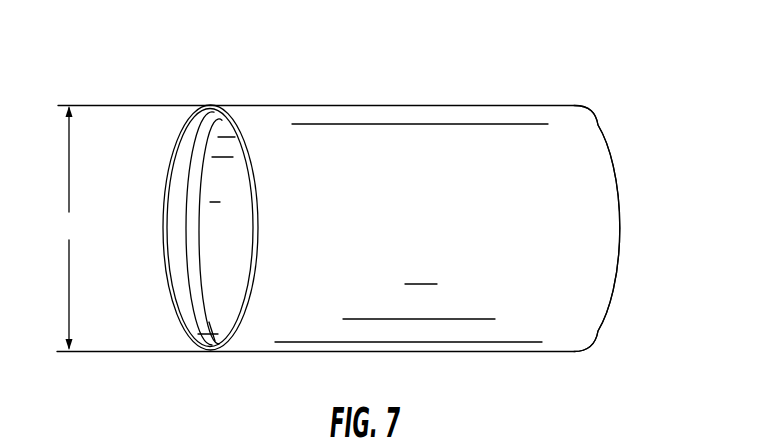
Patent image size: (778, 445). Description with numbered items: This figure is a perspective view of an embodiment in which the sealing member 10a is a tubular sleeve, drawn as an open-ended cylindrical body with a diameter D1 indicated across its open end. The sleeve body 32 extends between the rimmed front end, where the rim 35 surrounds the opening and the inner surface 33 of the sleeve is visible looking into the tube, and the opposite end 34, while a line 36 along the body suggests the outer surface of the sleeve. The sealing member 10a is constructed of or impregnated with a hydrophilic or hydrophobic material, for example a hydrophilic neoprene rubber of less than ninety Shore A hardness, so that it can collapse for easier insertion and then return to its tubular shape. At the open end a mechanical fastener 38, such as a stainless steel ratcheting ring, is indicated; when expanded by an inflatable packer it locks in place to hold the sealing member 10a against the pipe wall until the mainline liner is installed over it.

The sealing member 10a is at (202, 80).
The tube body 32 is at (465, 338).
The inner surface 33 is at (180, 209).
The second end 34 is at (595, 122).
The rim 35 is at (181, 131).
The outer surface 36 is at (424, 113).
The mechanical fastener 38 is at (204, 335).
The diameter D1 is at (68, 228).